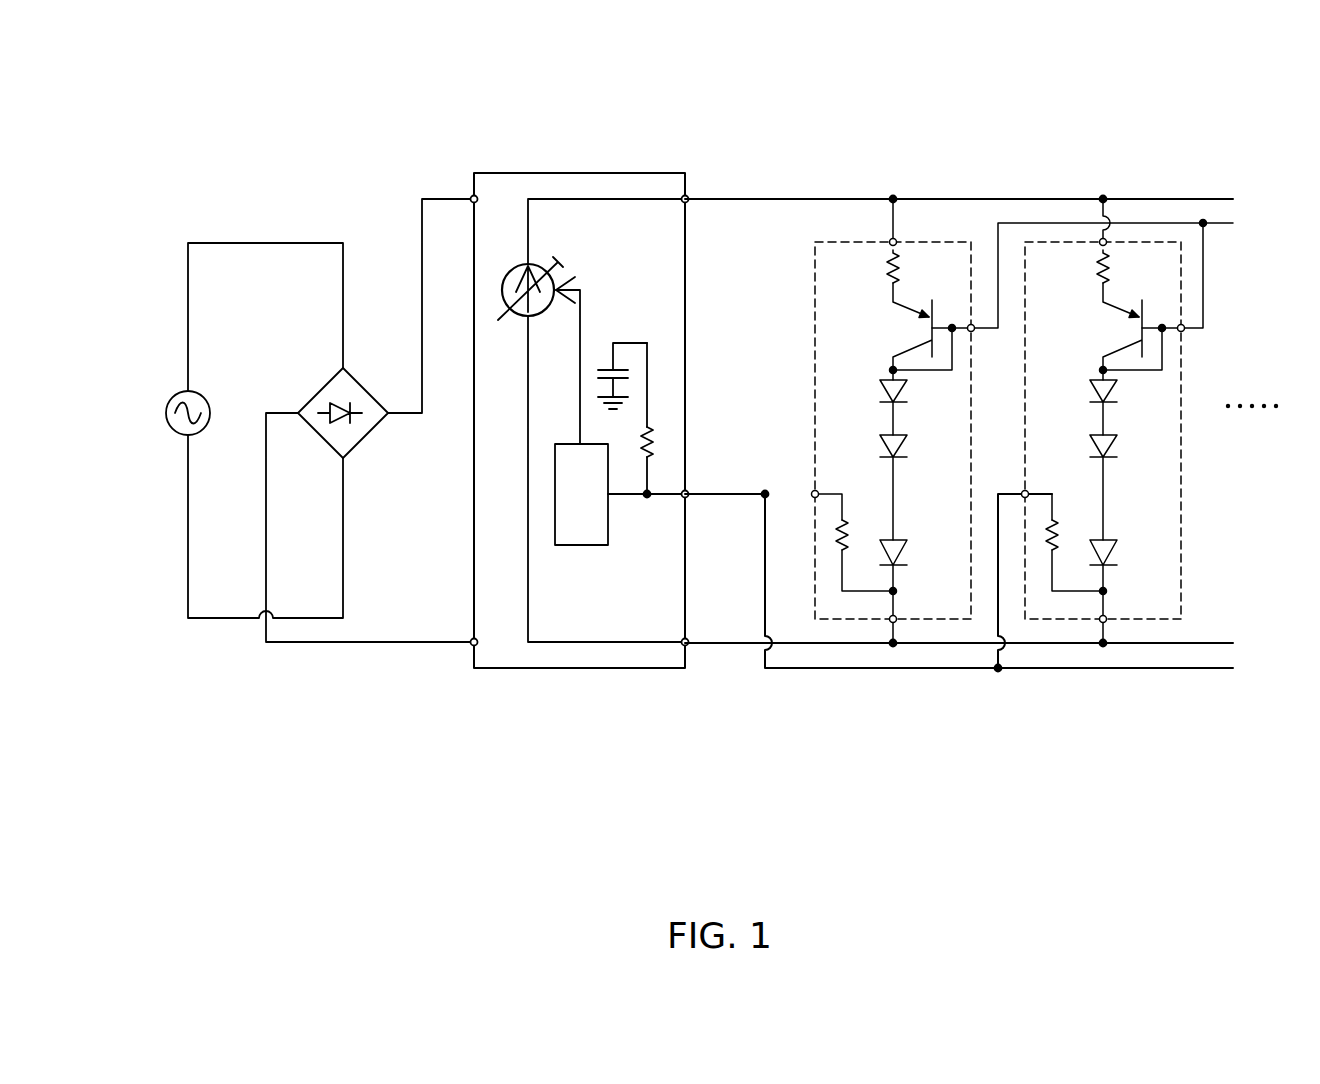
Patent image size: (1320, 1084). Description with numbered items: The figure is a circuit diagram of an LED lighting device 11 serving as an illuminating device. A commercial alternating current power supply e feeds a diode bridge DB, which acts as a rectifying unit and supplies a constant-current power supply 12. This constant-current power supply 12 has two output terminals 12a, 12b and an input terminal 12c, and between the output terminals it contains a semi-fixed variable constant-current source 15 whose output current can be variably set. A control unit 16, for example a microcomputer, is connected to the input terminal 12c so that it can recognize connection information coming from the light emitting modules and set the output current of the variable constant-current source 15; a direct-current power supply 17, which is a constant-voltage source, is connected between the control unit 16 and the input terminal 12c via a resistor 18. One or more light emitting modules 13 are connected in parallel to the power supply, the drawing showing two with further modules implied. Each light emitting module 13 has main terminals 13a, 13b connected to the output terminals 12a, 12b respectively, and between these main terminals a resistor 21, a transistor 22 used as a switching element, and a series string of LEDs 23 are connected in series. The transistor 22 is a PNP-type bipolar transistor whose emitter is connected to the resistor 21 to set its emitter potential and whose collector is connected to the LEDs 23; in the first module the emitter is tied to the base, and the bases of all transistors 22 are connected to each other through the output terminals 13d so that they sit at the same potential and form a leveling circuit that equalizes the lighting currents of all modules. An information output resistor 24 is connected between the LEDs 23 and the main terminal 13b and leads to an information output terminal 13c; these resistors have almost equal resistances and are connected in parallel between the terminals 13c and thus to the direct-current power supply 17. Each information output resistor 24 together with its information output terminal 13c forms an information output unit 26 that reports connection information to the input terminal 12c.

The LED lighting device 11 is at (731, 123).
The constant-current power supply 12 is at (532, 170).
The output terminal 12a is at (688, 196).
The output terminal 12b is at (688, 646).
The input terminal 12c is at (687, 491).
The light emitting module 13 is at (853, 238).
The main terminal 13a is at (896, 240).
The main terminal 13b is at (897, 622).
The information output terminal 13c is at (815, 490).
The output terminal 13d is at (975, 330).
The variable constant-current source 15 is at (540, 266).
The control unit 16 is at (559, 546).
The direct-current power supply 17 is at (600, 368).
The resistor 18 is at (647, 436).
The resistor 21 is at (898, 280).
The transistor 22 is at (934, 318).
The LED 23 is at (903, 388).
The information output resistor 24 is at (833, 537).
The information output unit 26 is at (835, 598).
The commercial alternating current power supply e is at (163, 406).
The diode bridge DB is at (313, 393).